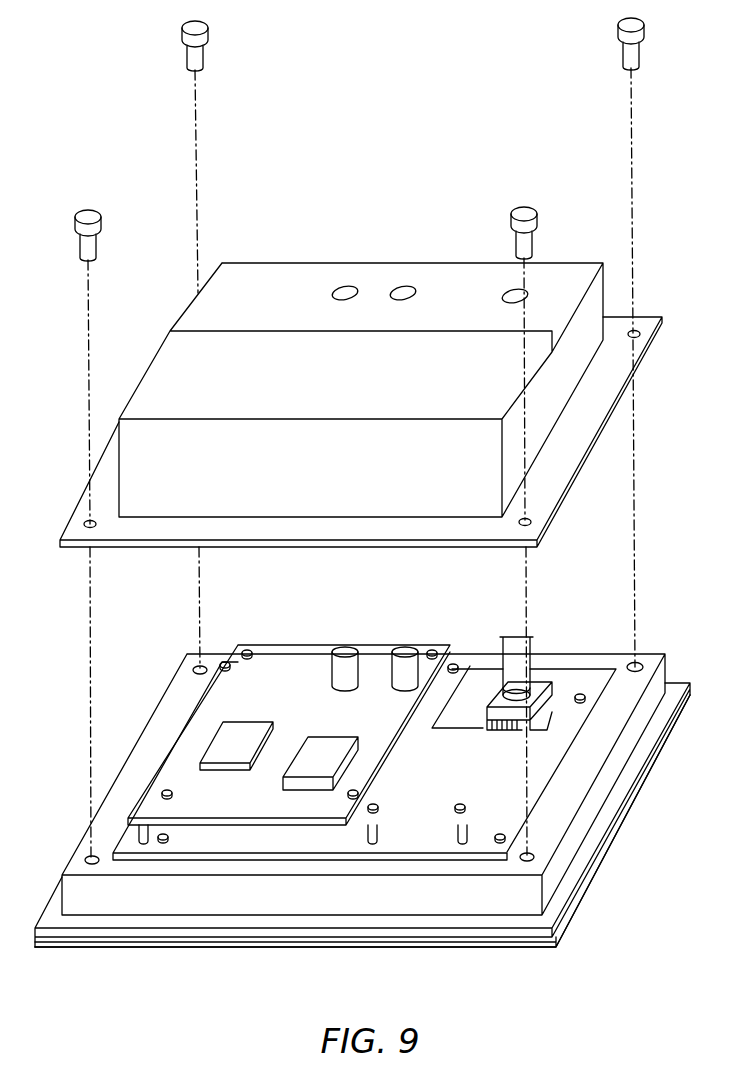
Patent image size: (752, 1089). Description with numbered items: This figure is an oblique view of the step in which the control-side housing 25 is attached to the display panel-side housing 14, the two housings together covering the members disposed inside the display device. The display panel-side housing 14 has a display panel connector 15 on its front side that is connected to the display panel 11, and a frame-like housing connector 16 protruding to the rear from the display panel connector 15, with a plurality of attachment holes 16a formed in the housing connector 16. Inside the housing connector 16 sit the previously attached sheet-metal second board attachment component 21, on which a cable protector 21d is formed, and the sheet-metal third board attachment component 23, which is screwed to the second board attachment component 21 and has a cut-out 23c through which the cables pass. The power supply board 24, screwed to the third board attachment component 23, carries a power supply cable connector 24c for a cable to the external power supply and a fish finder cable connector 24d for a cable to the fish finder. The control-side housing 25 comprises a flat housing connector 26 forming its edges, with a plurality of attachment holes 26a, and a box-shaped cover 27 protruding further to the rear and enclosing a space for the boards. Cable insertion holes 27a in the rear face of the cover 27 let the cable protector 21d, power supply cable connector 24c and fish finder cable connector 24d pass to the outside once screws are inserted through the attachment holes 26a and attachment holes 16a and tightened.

The display panel 11 is at (590, 886).
The display panel-side housing 14 is at (702, 660).
The display panel connector 15 is at (678, 685).
The housing connector 16 is at (593, 658).
The attachment holes 16a is at (195, 669).
The second board attachment component 21 is at (558, 758).
The cable protector 21d is at (555, 670).
The third board attachment component 23 is at (412, 826).
The cut-out 23c is at (491, 691).
The power supply board 24 is at (297, 647).
The power supply cable connector 24c is at (334, 680).
The fish finder cable connector 24d is at (424, 648).
The control-side housing 25 is at (664, 261).
The housing connector 26 is at (580, 438).
The attachment holes 26a is at (88, 521).
The cover 27 is at (248, 277).
The cable insertion holes 27a is at (512, 289).